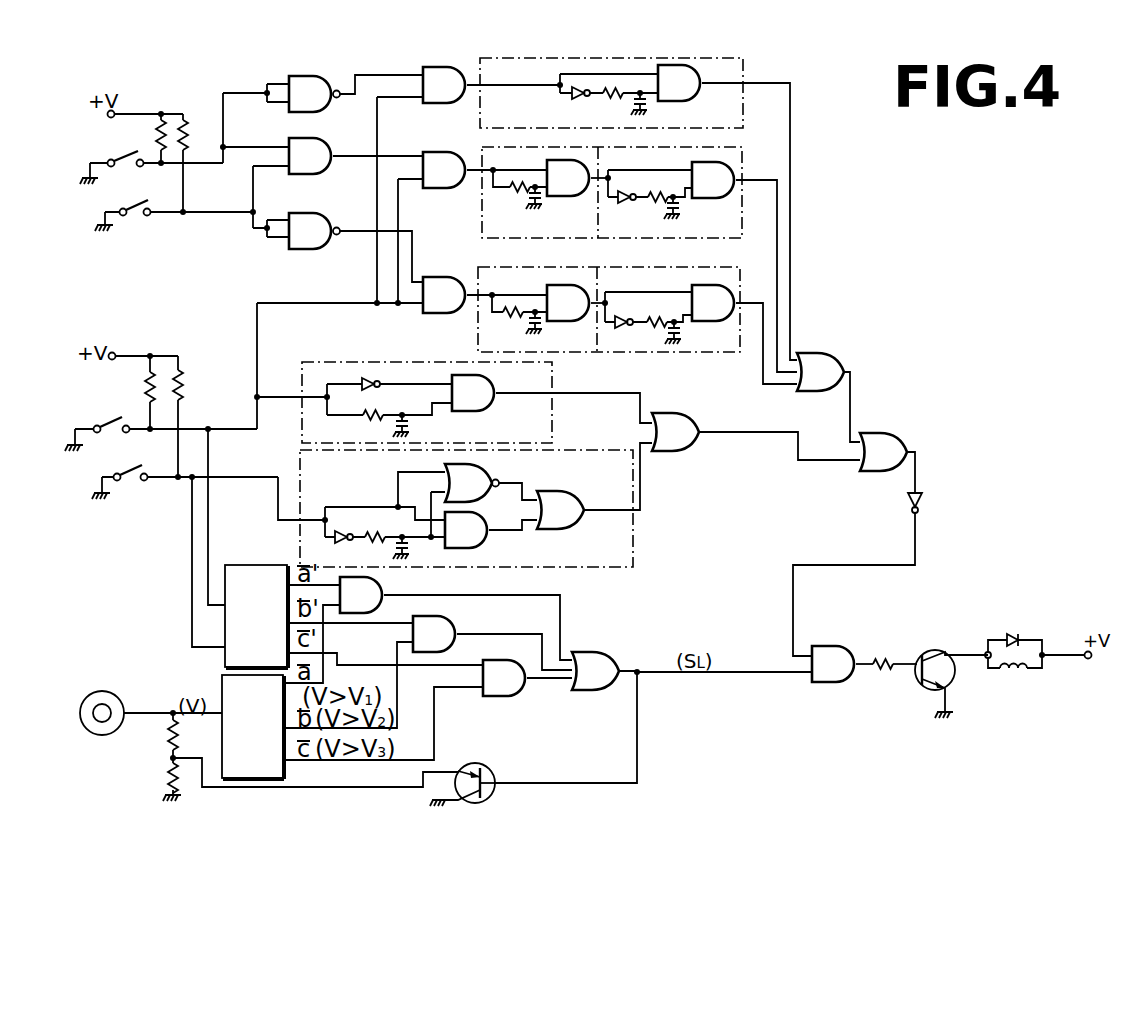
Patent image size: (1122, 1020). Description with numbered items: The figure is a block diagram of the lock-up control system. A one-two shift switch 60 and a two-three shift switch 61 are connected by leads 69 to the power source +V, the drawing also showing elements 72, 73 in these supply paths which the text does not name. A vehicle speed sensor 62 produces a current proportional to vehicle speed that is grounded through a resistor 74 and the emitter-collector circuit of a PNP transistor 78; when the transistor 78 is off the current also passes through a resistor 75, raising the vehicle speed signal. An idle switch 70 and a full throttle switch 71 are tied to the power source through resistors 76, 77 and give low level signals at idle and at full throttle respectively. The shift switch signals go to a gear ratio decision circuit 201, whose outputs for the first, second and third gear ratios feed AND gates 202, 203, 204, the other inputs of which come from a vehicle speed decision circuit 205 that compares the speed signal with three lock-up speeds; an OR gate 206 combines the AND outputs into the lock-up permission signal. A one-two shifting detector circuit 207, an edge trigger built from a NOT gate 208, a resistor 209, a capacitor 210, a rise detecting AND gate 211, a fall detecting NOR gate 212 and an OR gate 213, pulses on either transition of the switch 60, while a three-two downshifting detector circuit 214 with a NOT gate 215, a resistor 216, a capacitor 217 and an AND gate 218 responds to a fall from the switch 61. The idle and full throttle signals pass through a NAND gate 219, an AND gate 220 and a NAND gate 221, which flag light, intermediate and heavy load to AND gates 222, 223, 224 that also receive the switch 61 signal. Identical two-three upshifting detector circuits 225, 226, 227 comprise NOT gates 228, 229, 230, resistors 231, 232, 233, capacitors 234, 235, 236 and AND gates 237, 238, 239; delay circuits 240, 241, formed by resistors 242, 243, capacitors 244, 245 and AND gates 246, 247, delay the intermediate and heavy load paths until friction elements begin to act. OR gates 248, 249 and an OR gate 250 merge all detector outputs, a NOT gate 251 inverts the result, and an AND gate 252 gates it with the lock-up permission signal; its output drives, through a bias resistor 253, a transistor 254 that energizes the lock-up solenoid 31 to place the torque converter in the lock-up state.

The lock-up solenoid 31 is at (1008, 672).
The 1-2 shift switch 60 is at (128, 480).
The 2-3 shift switch 61 is at (106, 420).
The vehicle speed sensor 62 is at (117, 691).
The leads 69 is at (179, 416).
The idle switch 70 is at (113, 152).
The full throttle switch 71 is at (140, 216).
The resistor 72 is at (182, 385).
The resistor 73 is at (146, 388).
The resistor 74 is at (166, 736).
The resistor 75 is at (166, 775).
The resistor 76 is at (158, 140).
The resistor 77 is at (184, 119).
The PNP transistor 78 is at (492, 770).
The gear ratio decision circuit 201 is at (254, 563).
The AND gate 202 is at (395, 583).
The AND gate 203 is at (455, 628).
The AND gate 204 is at (516, 697).
The vehicle speed decision circuit 205 is at (221, 683).
The OR gate 206 is at (609, 653).
The 1-2 shifting detector circuit 207 is at (633, 550).
The NOT gate 208 is at (342, 528).
The resistor 209 is at (369, 528).
The capacitor 210 is at (413, 548).
The rise detecting AND gate 211 is at (488, 542).
The fall detecting NOR gate 212 is at (488, 480).
The OR gate 213 is at (571, 528).
The 3-2 downshifting detector circuit 214 is at (553, 440).
The NOT gate 215 is at (363, 378).
The resistor 216 is at (364, 419).
The capacitor 217 is at (409, 426).
The AND gate 218 is at (481, 412).
The NAND gate 219 is at (322, 112).
The AND gate 220 is at (292, 138).
The NAND gate 221 is at (311, 213).
The AND gate 222 is at (472, 82).
The AND gate 223 is at (437, 152).
The AND gate 224 is at (443, 277).
The 2-3 upshifting detector circuit 225 is at (743, 104).
The 2-3 upshifting detector circuit 226 is at (743, 157).
The 2-3 upshifting detector circuit 227 is at (741, 280).
The NOT gate 228 is at (568, 97).
The NOT gate 229 is at (642, 214).
The NOT gate 230 is at (622, 330).
The resistor 231 is at (608, 98).
The resistor 232 is at (656, 203).
The resistor 233 is at (650, 310).
The capacitor 234 is at (648, 104).
The capacitor 235 is at (682, 212).
The capacitor 236 is at (683, 337).
The AND gate 237 is at (705, 72).
The AND gate 238 is at (716, 199).
The AND gate 239 is at (716, 322).
The delay circuit 240 is at (481, 200).
The delay circuit 241 is at (478, 331).
The resistor 242 is at (517, 192).
The resistor 243 is at (510, 317).
The capacitor 244 is at (542, 200).
The capacitor 245 is at (546, 328).
The AND gate 246 is at (552, 160).
The AND gate 247 is at (551, 288).
The OR gate 248 is at (685, 450).
The OR gate 249 is at (846, 345).
The OR gate 250 is at (900, 443).
The NOT gate 251 is at (921, 508).
The AND gate 252 is at (826, 687).
The bias resistor 253 is at (884, 681).
The transistor 254 is at (937, 650).